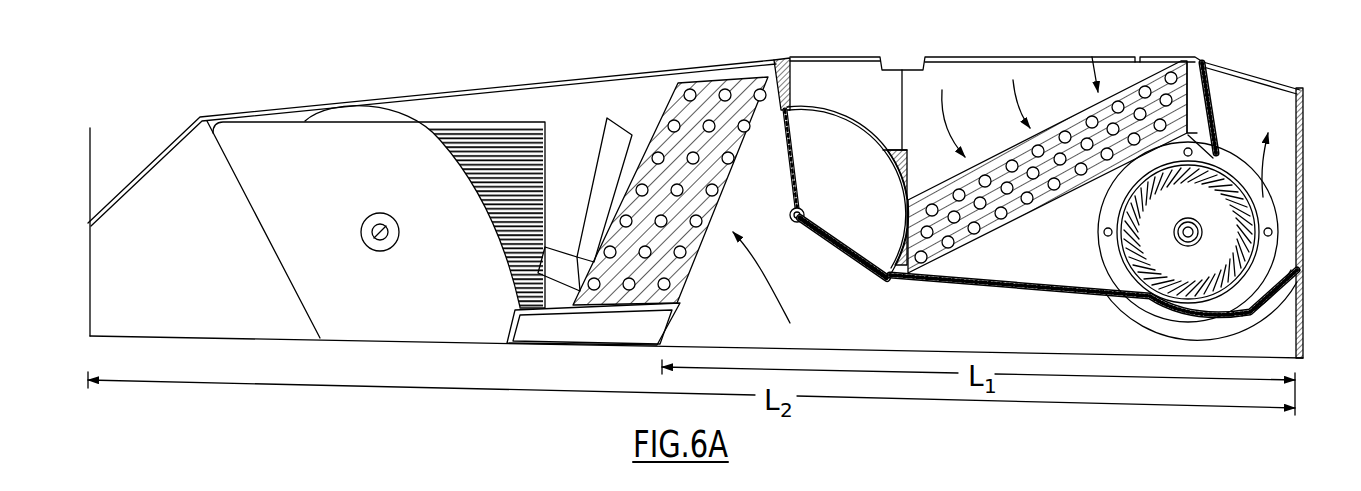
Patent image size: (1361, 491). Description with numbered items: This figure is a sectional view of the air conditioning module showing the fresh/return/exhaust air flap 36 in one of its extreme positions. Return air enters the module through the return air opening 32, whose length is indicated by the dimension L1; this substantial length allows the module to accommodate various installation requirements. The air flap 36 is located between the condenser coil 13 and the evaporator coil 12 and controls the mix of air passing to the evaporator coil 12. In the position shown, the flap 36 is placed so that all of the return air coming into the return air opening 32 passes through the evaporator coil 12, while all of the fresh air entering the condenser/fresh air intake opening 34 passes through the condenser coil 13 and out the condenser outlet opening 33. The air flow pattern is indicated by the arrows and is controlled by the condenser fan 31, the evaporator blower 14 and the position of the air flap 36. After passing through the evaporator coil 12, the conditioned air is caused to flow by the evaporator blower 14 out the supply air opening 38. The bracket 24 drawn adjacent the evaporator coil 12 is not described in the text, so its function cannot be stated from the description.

The evaporator coil 12 is at (705, 87).
The condenser coil 13 is at (1160, 62).
The evaporator blower 14 is at (357, 142).
The mounting bracket 24 is at (607, 137).
The condenser fan 31 is at (1230, 240).
The return air opening 32 is at (938, 412).
The condenser outlet opening 33 is at (1270, 78).
The condenser/fresh air intake opening 34 is at (998, 52).
The fresh/return/exhaust air flap 36 is at (793, 147).
The supply air opening 38 is at (217, 346).